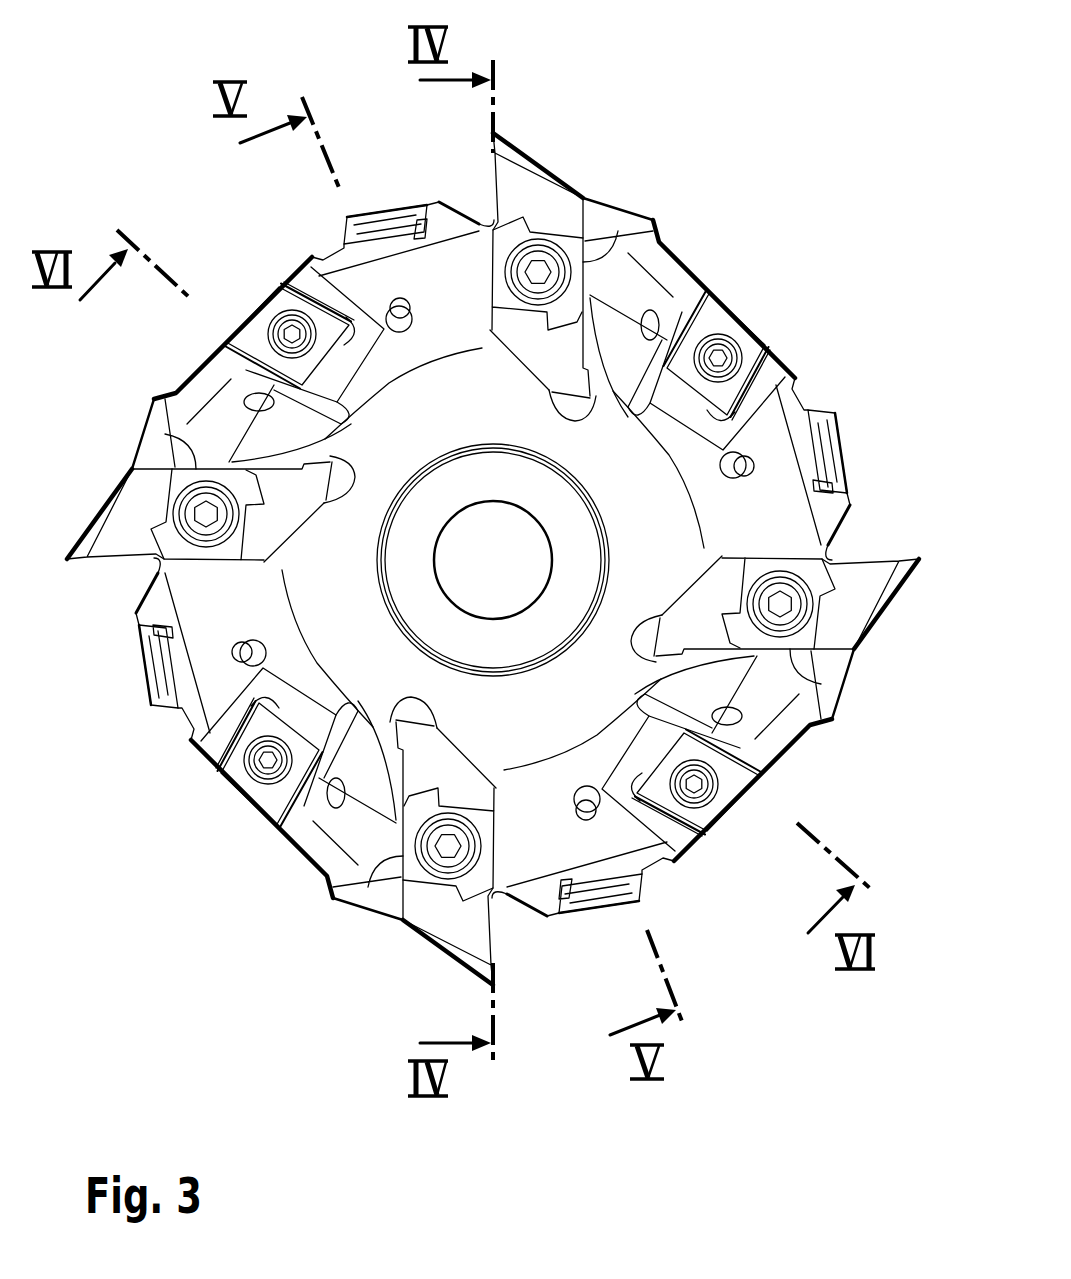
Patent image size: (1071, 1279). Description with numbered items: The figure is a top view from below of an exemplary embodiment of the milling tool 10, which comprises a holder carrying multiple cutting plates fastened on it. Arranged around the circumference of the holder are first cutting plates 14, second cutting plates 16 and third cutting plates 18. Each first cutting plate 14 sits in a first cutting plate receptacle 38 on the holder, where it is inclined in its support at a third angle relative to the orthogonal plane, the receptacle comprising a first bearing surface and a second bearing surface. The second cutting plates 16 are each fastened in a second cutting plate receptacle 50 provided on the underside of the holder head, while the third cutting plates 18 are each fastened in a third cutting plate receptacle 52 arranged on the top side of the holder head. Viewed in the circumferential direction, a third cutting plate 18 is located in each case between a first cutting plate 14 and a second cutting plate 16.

The milling tool 10 is at (782, 104).
The first cutting plate 14 is at (556, 179).
The second cutting plate 16 is at (748, 315).
The third cutting plate 18 is at (848, 449).
The first cutting plate receptacle 38 is at (610, 262).
The second cutting plate receptacle 50 is at (765, 381).
The third cutting plate receptacle 52 is at (809, 413).